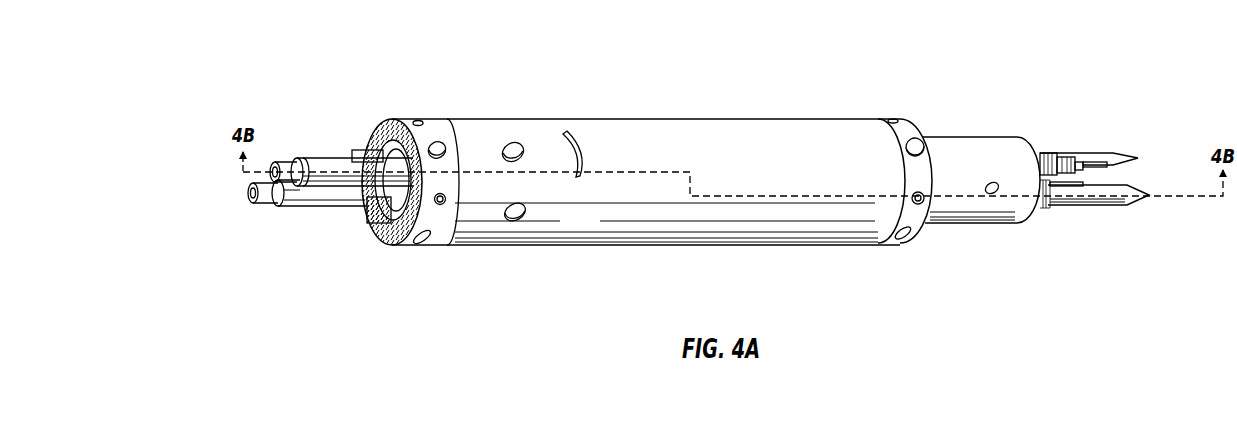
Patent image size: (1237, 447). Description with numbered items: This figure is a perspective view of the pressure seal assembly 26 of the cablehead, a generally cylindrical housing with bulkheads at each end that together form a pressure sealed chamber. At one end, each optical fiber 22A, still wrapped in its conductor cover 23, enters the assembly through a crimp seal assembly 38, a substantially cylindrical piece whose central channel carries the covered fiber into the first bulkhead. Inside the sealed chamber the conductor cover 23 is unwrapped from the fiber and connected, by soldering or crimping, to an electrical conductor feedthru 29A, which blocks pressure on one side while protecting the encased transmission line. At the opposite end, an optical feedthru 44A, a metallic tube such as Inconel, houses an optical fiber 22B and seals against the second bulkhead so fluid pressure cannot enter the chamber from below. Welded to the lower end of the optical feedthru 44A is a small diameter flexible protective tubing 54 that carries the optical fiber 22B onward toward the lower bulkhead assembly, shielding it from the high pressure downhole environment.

The pressure seal assembly 26 is at (702, 115).
The optical fiber 22A is at (250, 193).
The conductor cover 23 is at (228, 196).
The crimp seal assembly 38 is at (328, 208).
The electrical conductor feedthru 29A is at (1060, 162).
The optical feedthru 44A is at (1067, 152).
The optical fiber 22B is at (1195, 160).
The protective tubing 54 is at (1089, 160).